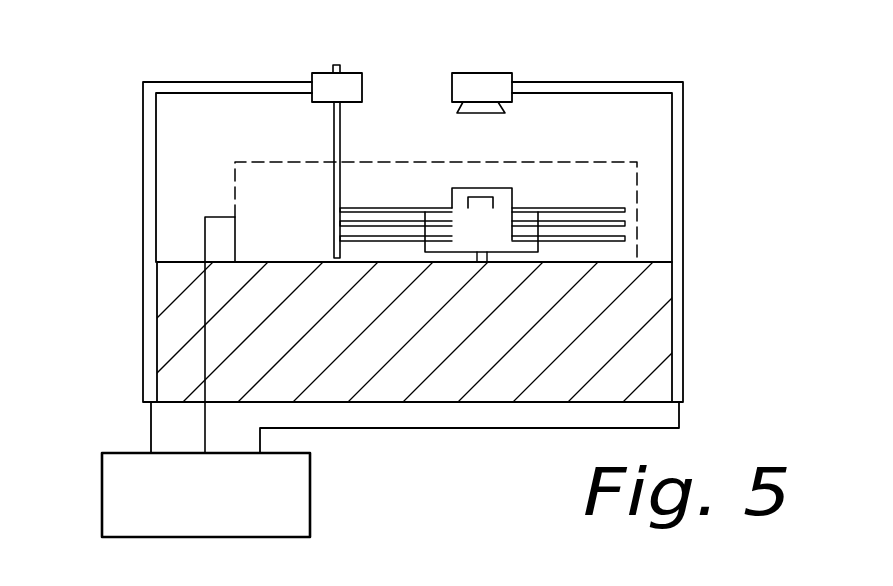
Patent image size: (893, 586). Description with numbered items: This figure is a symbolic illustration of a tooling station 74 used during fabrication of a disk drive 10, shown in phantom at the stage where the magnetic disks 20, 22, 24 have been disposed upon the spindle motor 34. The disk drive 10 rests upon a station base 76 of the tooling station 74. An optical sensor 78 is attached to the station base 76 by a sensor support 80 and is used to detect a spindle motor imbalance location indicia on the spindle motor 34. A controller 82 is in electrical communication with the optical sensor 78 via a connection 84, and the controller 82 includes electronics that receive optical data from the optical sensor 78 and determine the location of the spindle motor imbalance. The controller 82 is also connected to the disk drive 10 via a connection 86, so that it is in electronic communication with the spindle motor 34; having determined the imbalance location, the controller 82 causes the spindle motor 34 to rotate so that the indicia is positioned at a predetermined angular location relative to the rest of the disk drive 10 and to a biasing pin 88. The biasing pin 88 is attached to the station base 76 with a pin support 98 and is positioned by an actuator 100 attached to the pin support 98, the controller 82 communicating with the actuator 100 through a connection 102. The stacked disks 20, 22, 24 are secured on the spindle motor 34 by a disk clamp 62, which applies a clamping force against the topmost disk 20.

The disk drive 10 is at (422, 191).
The magnetic disk 20 is at (605, 209).
The magnetic disk 22 is at (625, 222).
The magnetic disk 24 is at (625, 238).
The spindle motor 34 is at (527, 247).
The disk clamp 62 is at (503, 190).
The tooling station 74 is at (108, 94).
The station base 76 is at (165, 333).
The optical sensor 78 is at (485, 73).
The sensor support 80 is at (600, 82).
The controller 82 is at (310, 490).
The connection 84 is at (530, 428).
The connection 86 is at (217, 217).
The biasing pin 88 is at (334, 145).
The pin support 98 is at (143, 213).
The actuator 100 is at (350, 73).
The connection 102 is at (151, 432).